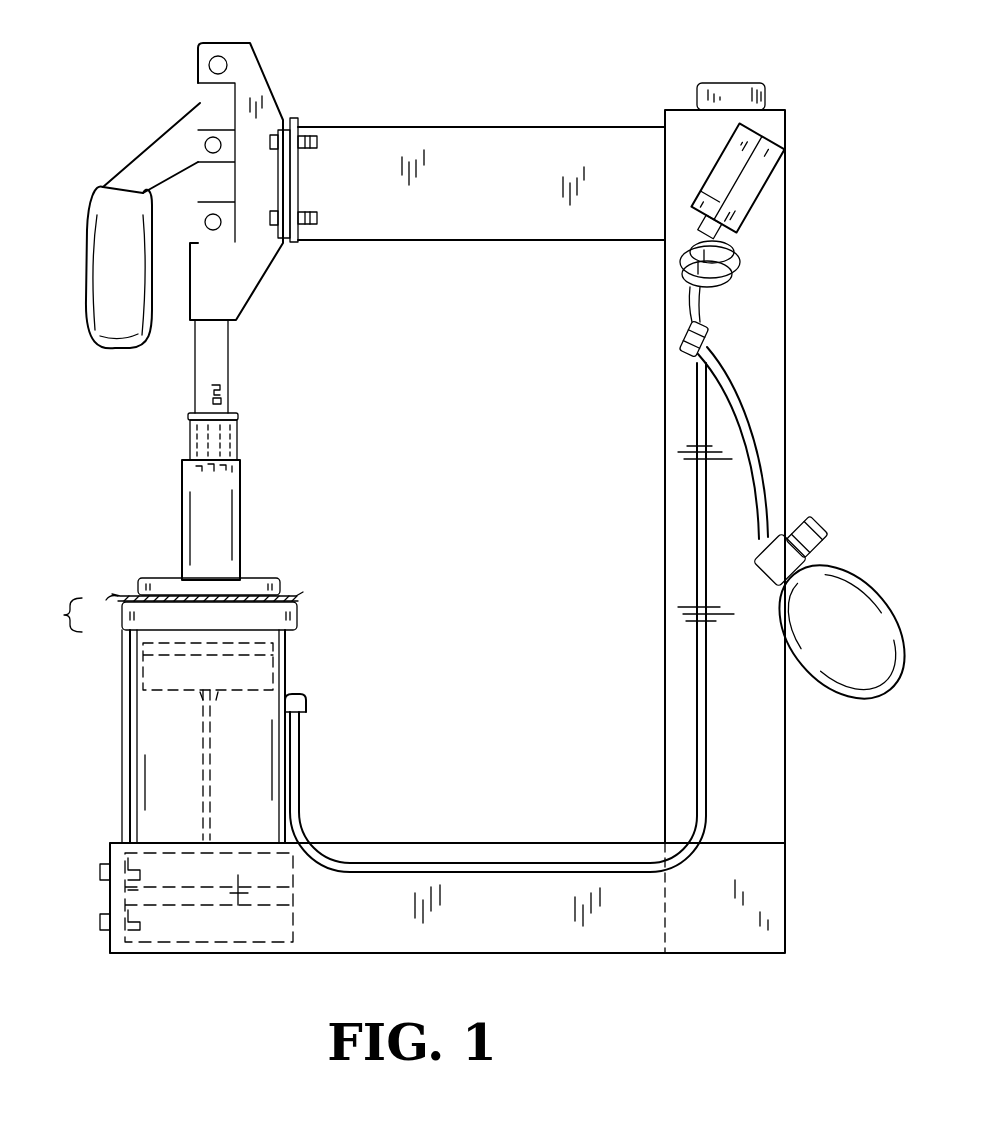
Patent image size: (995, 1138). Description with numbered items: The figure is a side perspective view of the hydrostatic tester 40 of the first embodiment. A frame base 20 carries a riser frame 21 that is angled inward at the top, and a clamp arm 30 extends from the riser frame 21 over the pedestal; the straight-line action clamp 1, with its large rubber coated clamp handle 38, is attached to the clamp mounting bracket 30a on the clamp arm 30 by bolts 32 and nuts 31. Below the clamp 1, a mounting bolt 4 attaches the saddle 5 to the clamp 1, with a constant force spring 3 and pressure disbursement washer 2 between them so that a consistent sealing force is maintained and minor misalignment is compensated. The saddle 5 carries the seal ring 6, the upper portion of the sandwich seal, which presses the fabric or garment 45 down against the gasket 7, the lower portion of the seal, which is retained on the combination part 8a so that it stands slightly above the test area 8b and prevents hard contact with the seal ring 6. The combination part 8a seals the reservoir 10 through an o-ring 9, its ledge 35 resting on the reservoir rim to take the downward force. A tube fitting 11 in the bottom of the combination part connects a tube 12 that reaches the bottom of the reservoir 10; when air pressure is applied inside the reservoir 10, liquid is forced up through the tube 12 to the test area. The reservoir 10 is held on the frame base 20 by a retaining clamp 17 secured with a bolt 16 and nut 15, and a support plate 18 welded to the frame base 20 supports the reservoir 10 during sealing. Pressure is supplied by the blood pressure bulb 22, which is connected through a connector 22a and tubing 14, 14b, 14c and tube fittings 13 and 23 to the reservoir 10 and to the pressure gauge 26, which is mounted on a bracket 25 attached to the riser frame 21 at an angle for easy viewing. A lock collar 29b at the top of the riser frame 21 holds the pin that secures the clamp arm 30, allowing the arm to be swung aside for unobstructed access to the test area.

The straight-line action clamp 1 is at (187, 127).
The pressure disbursement washer 2 is at (188, 418).
The constant force spring 3 is at (190, 442).
The mounting bolt 4 is at (243, 438).
The saddle 5 is at (230, 523).
The seal ring 6 is at (278, 580).
The gasket 7 is at (245, 600).
The combination part 8a is at (53, 615).
The test area 8b is at (299, 620).
The o-ring 9 is at (275, 651).
The reservoir 10 is at (290, 678).
The tube fitting 11 is at (198, 703).
The tube 12 is at (213, 768).
The tube fitting 13 is at (306, 704).
The tubing 14 is at (300, 779).
The tubing 14b is at (752, 426).
The tubing 14c is at (695, 295).
The nut 15 is at (102, 899).
The bolt 16 is at (100, 869).
The retaining clamp 17 is at (296, 906).
The support plate 18 is at (185, 946).
The frame base 20 is at (512, 935).
The riser frame 21 is at (673, 653).
The blood pressure bulb 22 is at (843, 592).
The connector 22a is at (818, 518).
The tube fitting 23 is at (708, 333).
The bracket 25 is at (731, 268).
The pressure gauge 26 is at (724, 146).
The lock collar 29b is at (728, 83).
The clamp arm 30 is at (548, 128).
The clamp mounting bracket 30a is at (300, 122).
The nuts 31 is at (310, 230).
The bolts 32 is at (272, 243).
The ledge 35 is at (125, 636).
The clamp handle 38 is at (107, 308).
The hydrostatic tester 40 is at (511, 78).
The fabric or garment 45 is at (112, 594).